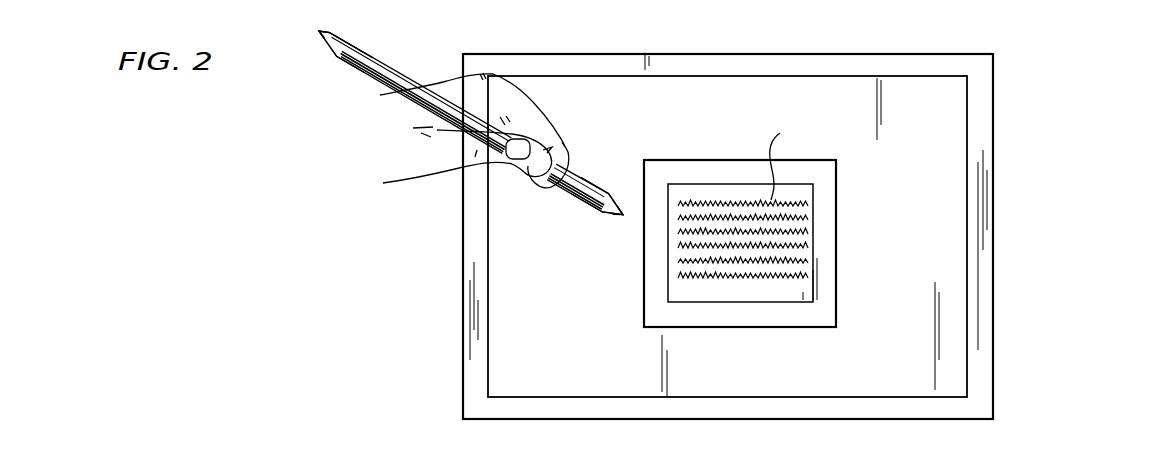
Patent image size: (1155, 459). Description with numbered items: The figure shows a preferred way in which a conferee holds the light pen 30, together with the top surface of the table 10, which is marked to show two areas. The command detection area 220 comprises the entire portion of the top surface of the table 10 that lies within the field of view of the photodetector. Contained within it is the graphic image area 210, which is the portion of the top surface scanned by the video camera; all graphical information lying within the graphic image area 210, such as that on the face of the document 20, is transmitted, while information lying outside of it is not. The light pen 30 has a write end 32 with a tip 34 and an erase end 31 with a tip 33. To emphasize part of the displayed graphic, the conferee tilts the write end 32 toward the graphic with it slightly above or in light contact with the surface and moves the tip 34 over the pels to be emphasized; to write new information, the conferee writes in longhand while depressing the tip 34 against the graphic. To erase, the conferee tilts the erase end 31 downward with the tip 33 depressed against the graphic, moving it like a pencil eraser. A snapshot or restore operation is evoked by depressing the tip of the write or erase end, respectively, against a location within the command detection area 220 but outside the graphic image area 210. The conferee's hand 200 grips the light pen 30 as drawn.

The table 10 is at (980, 345).
The document 20 is at (813, 204).
The light pen 30 is at (577, 176).
The erase end 31 is at (355, 68).
The write end 32 is at (584, 195).
The tip 33 is at (318, 31).
The tip 34 is at (623, 216).
The user's hand 200 is at (421, 177).
The graphic image area 210 is at (655, 303).
The command detection area 220 is at (945, 108).